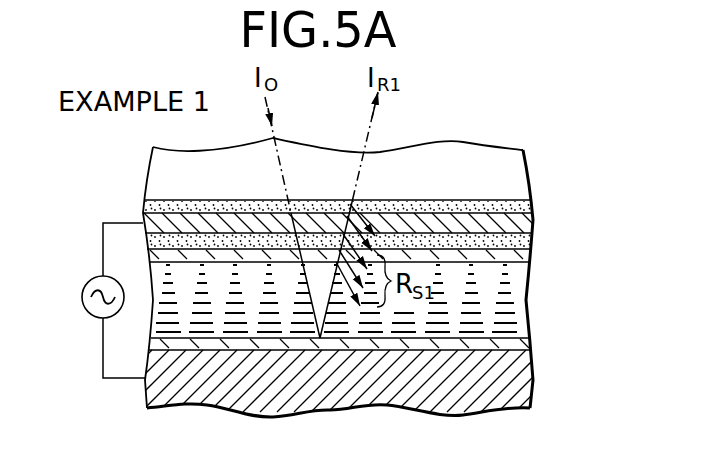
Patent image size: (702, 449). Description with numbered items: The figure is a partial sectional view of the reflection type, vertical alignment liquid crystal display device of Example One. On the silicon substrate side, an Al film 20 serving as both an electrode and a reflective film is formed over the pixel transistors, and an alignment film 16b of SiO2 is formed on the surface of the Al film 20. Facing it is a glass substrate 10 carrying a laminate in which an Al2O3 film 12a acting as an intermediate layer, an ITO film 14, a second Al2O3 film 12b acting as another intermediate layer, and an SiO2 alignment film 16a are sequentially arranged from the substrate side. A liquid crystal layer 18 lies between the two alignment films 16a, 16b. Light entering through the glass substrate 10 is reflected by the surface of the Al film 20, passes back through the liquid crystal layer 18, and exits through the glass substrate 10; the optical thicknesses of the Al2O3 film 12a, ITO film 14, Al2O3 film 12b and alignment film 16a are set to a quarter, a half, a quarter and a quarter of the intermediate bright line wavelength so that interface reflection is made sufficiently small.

The glass substrate 10 is at (526, 161).
The Al2O3 film 12a is at (536, 207).
The ITO film 14 is at (537, 228).
The Al2O3 film 12b is at (537, 246).
The alignment film 16a is at (535, 267).
The liquid crystal layer 18 is at (528, 310).
The alignment film 16b is at (530, 347).
The Al film 20 is at (523, 383).